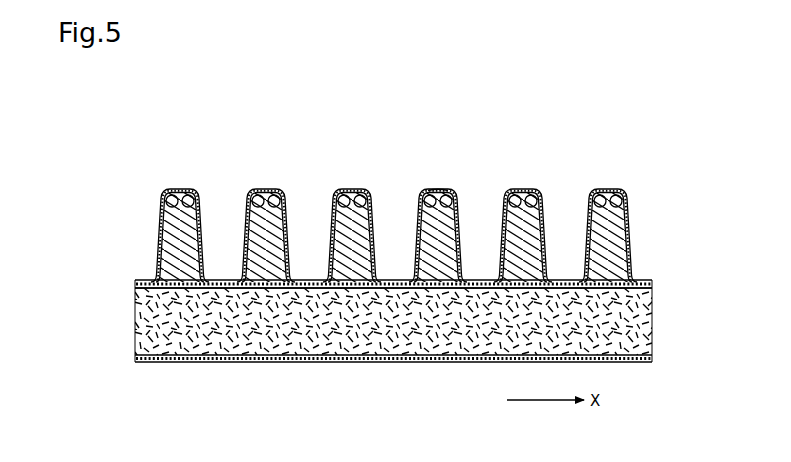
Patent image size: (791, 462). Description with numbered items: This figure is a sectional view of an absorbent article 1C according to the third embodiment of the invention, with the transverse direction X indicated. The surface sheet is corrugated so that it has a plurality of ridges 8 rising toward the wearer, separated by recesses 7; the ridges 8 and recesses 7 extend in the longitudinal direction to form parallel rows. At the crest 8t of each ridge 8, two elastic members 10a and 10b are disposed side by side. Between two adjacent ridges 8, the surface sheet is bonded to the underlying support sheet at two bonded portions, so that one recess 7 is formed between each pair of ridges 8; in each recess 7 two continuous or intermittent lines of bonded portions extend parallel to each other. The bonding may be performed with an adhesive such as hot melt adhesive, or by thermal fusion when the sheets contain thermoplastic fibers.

The absorbent article 1C is at (211, 155).
The recess 7 is at (309, 268).
The ridge 8 is at (440, 265).
The crest 8t is at (437, 189).
The elastic member 10a is at (426, 194).
The elastic member 10b is at (452, 191).